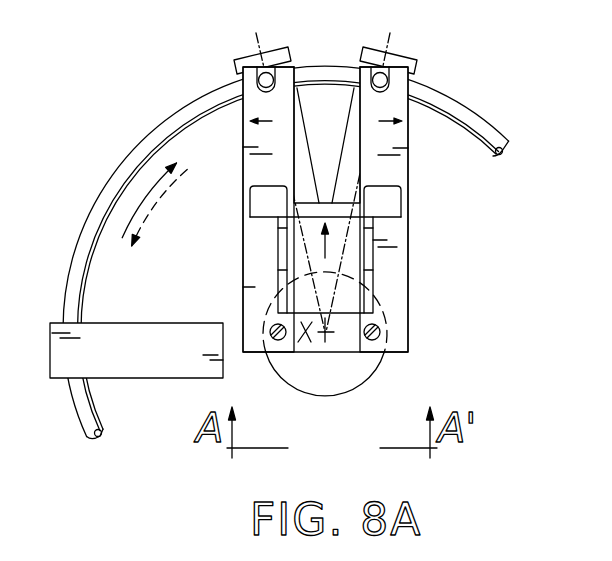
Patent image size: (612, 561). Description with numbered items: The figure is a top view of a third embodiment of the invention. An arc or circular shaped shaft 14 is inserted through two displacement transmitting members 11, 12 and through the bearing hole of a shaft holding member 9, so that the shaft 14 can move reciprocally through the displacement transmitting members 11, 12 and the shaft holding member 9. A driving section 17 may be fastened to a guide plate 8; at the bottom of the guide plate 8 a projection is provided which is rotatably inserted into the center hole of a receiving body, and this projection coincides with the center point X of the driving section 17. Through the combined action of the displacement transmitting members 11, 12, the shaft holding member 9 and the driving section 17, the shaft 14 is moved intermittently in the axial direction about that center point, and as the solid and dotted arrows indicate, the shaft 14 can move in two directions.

The guide plate 8 is at (338, 388).
The shaft holding member 9 is at (170, 318).
The displacement transmitting member 11 is at (393, 63).
The displacement transmitting member 12 is at (245, 65).
The shaft 14 is at (468, 112).
The driving section 17 is at (403, 280).